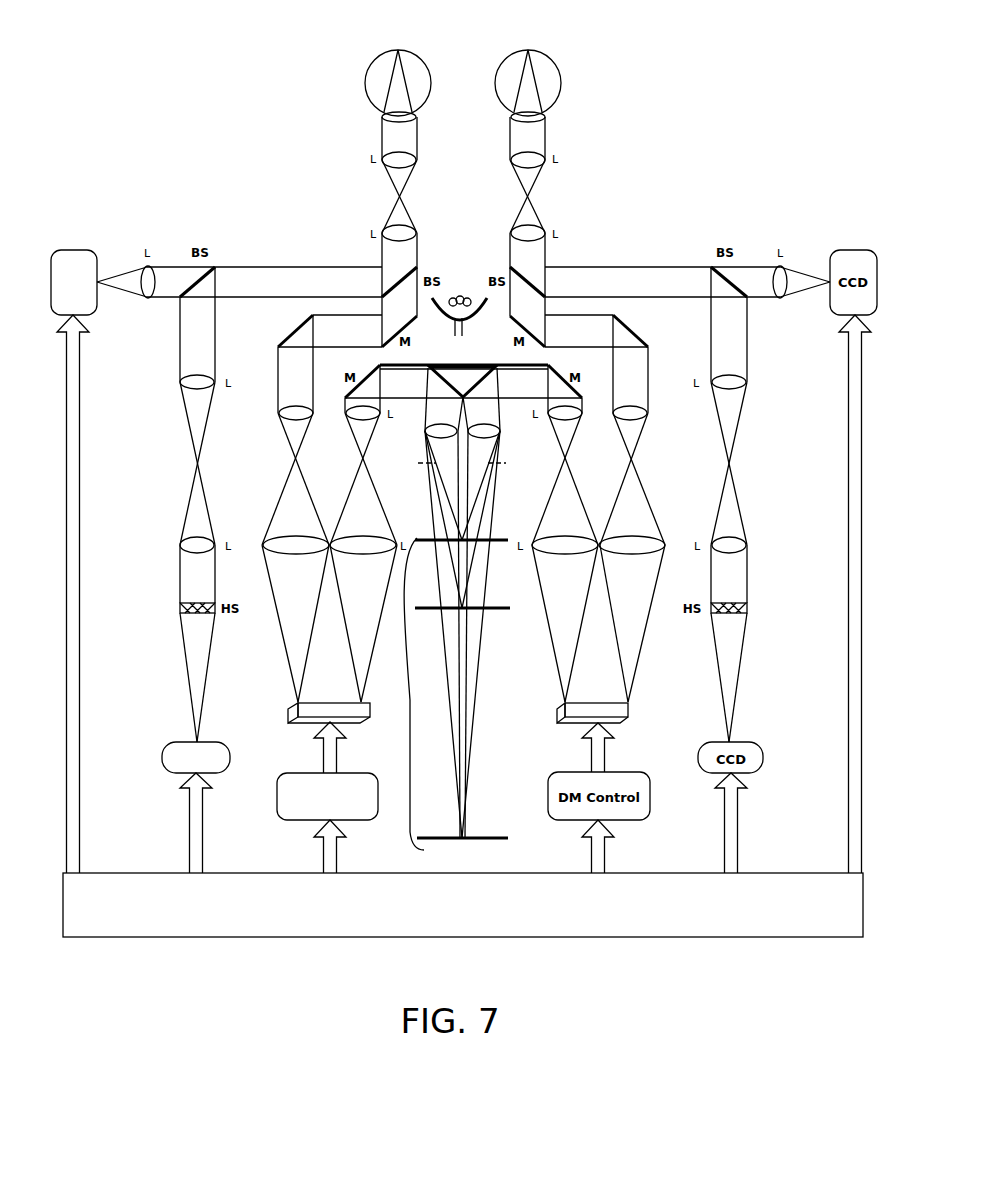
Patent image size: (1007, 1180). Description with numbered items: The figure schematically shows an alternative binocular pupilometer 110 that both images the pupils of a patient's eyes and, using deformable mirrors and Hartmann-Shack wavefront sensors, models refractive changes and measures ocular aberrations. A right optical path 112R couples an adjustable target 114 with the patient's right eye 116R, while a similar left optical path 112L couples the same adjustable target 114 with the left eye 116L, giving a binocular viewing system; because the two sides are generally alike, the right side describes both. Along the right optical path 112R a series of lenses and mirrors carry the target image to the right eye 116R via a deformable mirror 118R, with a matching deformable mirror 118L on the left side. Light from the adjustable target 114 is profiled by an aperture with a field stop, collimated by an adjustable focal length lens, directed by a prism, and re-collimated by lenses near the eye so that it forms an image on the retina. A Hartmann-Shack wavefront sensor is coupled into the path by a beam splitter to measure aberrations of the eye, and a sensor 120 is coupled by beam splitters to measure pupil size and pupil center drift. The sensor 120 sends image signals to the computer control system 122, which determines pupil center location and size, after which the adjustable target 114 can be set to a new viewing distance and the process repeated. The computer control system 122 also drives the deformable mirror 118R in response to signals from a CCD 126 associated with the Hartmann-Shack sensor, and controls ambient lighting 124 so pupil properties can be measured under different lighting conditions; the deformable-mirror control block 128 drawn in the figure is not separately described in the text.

The pupilometer 110 is at (750, 83).
The right optical path 112R is at (288, 470).
The left optical path 112L is at (640, 470).
The adjustable target 114 is at (405, 690).
The right eye 116R is at (378, 100).
The left eye 116L is at (548, 100).
The deformable mirror 118R is at (298, 723).
The deformable mirror 118L is at (628, 723).
The sensor 120 is at (73, 250).
The computer control system 122 is at (755, 937).
The ambient lighting 124 is at (460, 292).
The CCD 126 is at (162, 757).
The deformable mirror controller 128 is at (277, 797).